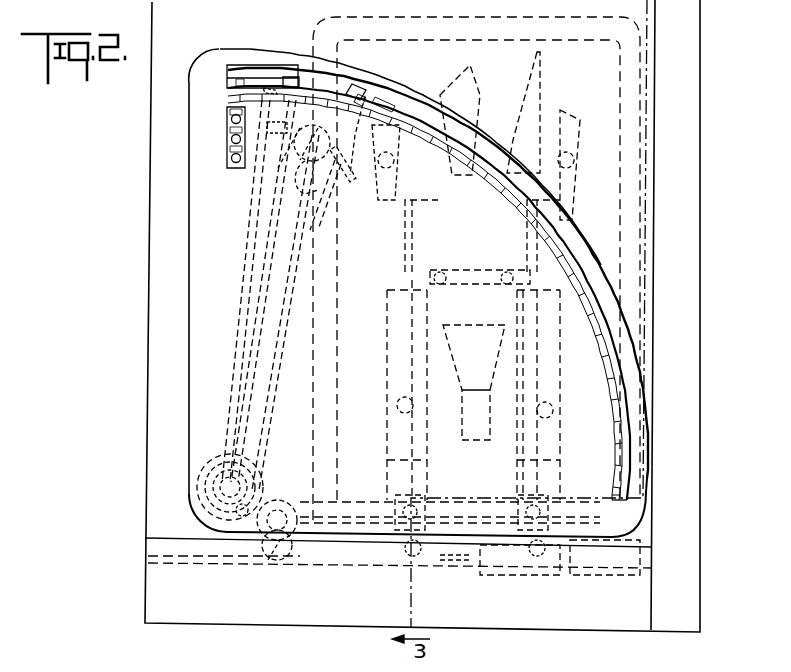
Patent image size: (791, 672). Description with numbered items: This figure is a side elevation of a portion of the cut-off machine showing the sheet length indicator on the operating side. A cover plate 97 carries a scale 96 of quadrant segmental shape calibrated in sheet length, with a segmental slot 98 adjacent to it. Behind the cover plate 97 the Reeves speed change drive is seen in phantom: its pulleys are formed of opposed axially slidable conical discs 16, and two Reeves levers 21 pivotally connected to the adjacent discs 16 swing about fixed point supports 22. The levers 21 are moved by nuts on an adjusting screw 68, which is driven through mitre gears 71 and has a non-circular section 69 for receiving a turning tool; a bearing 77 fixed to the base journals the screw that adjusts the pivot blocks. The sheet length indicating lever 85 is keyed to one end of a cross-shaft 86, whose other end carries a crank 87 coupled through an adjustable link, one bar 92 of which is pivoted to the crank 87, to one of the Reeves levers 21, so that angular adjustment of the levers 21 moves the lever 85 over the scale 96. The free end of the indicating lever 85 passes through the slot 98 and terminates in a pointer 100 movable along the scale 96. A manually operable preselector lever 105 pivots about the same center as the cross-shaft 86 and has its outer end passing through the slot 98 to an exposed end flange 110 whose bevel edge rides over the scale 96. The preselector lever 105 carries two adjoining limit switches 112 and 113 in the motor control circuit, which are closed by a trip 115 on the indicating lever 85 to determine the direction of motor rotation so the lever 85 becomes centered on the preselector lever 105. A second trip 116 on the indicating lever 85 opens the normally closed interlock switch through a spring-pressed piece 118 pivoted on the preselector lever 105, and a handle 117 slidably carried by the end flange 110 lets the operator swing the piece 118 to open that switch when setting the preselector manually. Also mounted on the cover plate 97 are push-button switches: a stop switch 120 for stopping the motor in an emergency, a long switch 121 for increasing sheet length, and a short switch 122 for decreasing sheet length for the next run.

The conical disc 16 is at (528, 85).
The Reeves lever 21 is at (382, 356).
The fixed point support 22 is at (508, 270).
The adjusting screw 68 is at (588, 553).
The non-circular section 69 is at (453, 542).
The mitre gears 71 is at (278, 560).
The bearing 77 is at (480, 568).
The indicator pointer 85 is at (247, 279).
The cross-shaft 86 is at (250, 487).
The crank 87 is at (200, 518).
The bar 92 is at (253, 523).
The scale 96 is at (558, 270).
The cover plate 97 is at (191, 246).
The segmental slot 98 is at (248, 72).
The pointer 100 is at (288, 78).
The preselector lever 105 is at (297, 322).
The end flange 110 is at (361, 97).
The limit switch 112 is at (300, 200).
The limit switch 113 is at (337, 191).
The trip 115 is at (283, 164).
The trip 116 is at (268, 93).
The handle 117 is at (357, 90).
The spring-pressed piece 118 is at (391, 87).
The stop switch 120 is at (228, 158).
The long switch 121 is at (228, 139).
The short switch 122 is at (228, 118).